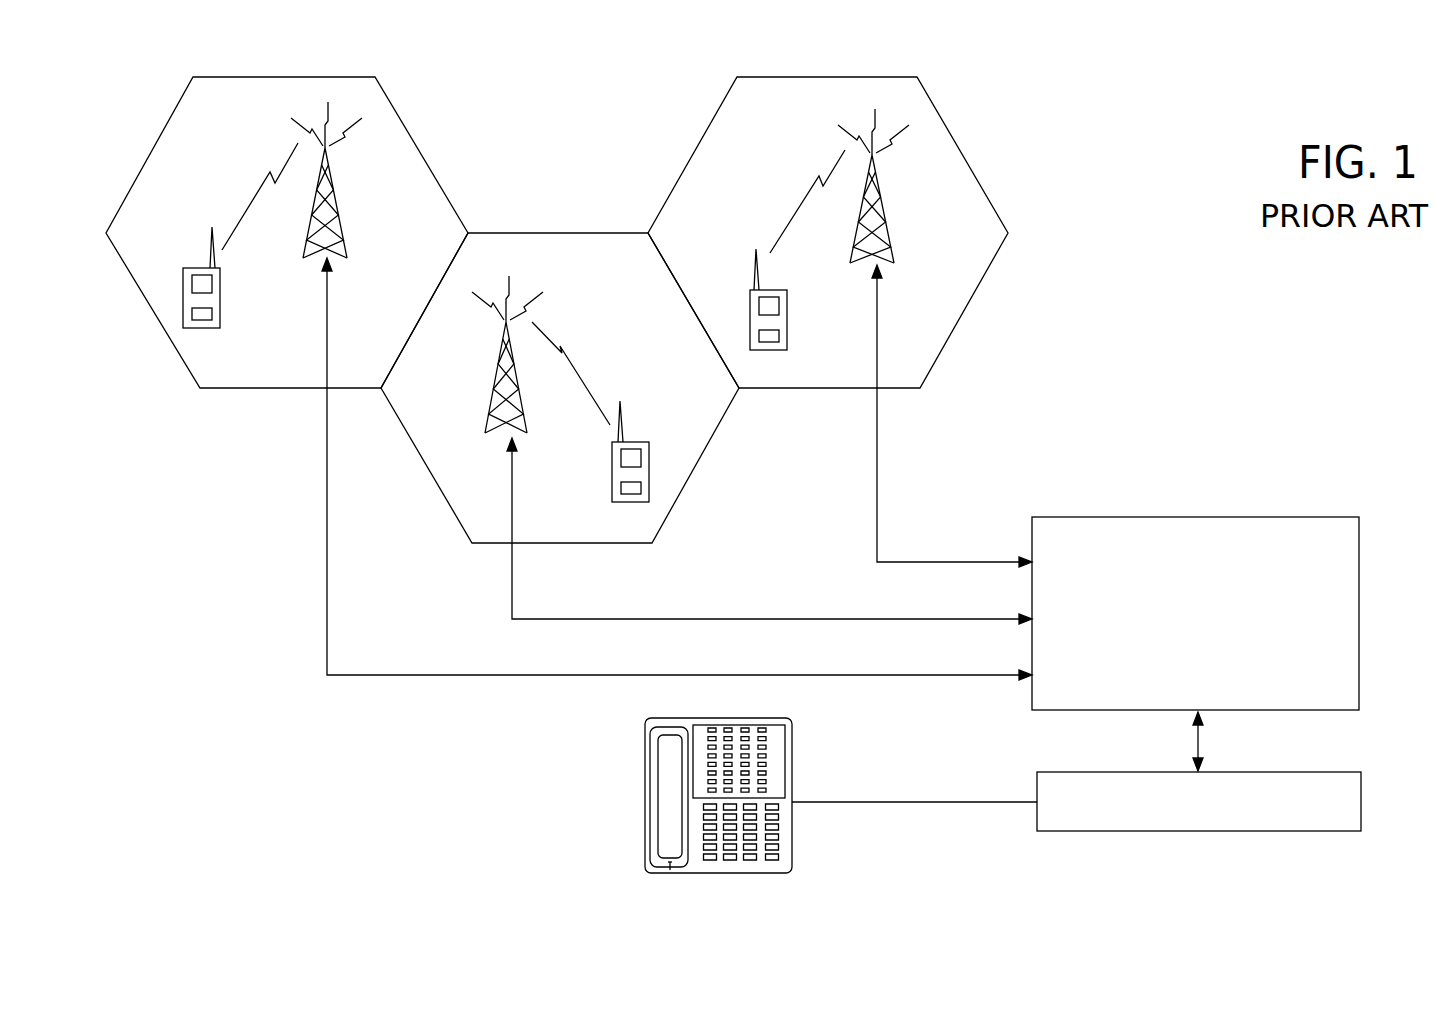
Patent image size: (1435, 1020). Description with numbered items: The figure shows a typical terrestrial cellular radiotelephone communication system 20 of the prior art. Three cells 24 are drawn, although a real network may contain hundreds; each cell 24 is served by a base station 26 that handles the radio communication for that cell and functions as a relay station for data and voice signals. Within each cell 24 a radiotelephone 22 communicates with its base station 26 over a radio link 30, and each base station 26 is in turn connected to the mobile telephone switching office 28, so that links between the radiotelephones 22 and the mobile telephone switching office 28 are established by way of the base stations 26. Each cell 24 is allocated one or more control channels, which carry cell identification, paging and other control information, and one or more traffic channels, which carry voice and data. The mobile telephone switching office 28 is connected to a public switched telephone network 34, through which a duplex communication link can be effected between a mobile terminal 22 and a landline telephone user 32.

The cellular radiotelephone communication system 20 is at (1065, 185).
The radiotelephone 22 is at (188, 268).
The cell 24 is at (333, 77).
The base station 26 is at (348, 193).
The mobile telephone switching office 28 is at (1312, 517).
The radio link 30 is at (240, 192).
The landline telephone user 32 is at (647, 768).
The public switched telephone network 34 is at (1288, 831).